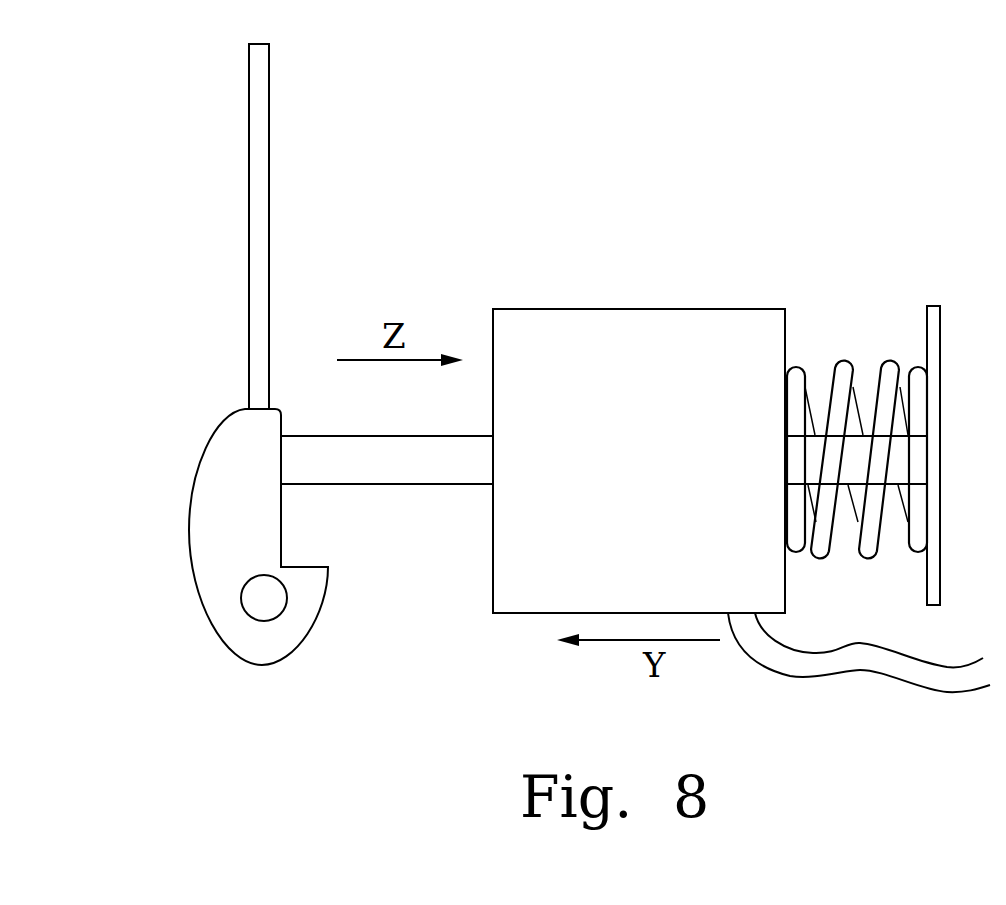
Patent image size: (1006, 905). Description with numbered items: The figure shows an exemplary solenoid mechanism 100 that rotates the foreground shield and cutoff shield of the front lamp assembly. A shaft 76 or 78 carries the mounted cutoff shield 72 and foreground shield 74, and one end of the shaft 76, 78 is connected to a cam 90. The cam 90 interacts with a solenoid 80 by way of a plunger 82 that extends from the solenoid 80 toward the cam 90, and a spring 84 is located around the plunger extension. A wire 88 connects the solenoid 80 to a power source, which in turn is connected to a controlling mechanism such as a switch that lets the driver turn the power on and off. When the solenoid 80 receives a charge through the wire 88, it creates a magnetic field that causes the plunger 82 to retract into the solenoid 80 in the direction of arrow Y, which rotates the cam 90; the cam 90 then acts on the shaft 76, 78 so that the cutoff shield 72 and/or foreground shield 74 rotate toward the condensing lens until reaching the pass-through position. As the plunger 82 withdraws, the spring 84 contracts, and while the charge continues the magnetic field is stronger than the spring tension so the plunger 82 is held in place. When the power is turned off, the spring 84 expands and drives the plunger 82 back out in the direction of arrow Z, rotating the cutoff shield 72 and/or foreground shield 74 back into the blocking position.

The solenoid mechanism 100 is at (864, 131).
The cutoff shield 72 is at (331, 226).
The foreground shield 74 is at (280, 128).
The cam 90 is at (185, 593).
The shaft 76 is at (243, 652).
The shaft 78 is at (264, 598).
The plunger 82 is at (421, 490).
The solenoid 80 is at (688, 305).
The spring 84 is at (848, 350).
The wire 88 is at (950, 667).